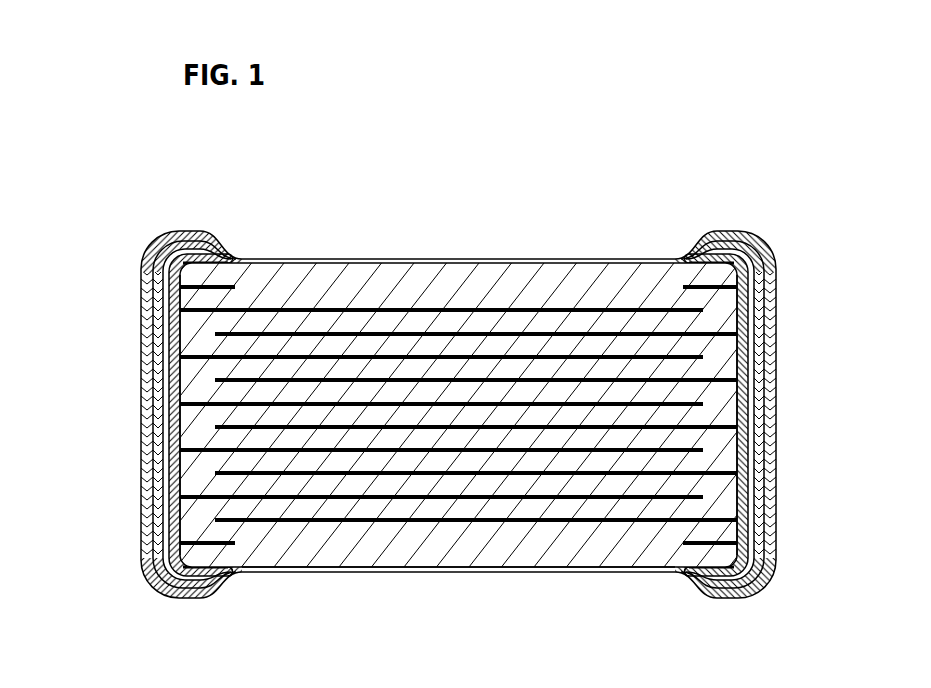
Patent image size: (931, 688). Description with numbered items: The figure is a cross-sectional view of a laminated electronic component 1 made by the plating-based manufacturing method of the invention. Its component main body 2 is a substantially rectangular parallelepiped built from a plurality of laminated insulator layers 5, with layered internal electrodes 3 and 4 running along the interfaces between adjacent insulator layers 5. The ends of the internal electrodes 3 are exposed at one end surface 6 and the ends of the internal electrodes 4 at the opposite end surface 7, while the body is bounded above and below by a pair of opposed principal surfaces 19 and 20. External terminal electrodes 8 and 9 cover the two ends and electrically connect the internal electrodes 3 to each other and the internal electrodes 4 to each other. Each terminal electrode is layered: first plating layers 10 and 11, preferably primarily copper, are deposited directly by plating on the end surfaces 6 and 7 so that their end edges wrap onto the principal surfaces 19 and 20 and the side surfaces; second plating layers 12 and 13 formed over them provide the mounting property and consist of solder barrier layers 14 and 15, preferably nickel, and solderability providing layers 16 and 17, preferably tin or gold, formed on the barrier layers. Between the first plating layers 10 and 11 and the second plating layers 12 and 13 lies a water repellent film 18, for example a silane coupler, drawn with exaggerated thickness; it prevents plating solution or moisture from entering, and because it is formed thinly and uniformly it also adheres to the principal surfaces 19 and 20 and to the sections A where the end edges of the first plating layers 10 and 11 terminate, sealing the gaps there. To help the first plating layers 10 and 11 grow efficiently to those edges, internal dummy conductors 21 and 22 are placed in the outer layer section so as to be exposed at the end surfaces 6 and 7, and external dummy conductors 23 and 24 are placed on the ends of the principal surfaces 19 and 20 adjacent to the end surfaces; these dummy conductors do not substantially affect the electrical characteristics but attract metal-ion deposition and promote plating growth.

The laminated electronic component 1 is at (261, 173).
The component main body 2 is at (465, 417).
The internal electrodes 3 is at (405, 357).
The internal electrodes 4 is at (552, 380).
The insulator layers 5 is at (482, 345).
The end surface 6 is at (170, 430).
The end surface 7 is at (738, 408).
The external terminal electrode 8 is at (131, 440).
The external terminal electrode 9 is at (788, 444).
The first plating layer 10 is at (170, 283).
The first plating layer 11 is at (738, 287).
The second plating layer 12 is at (139, 414).
The second plating layer 13 is at (771, 414).
The solder barrier layer 14 is at (157, 310).
The solder barrier layer 15 is at (758, 334).
The solderability providing layer 16 is at (143, 347).
The solderability providing layer 17 is at (770, 373).
The water repellent film 18 is at (577, 568).
The principal surface 19 is at (328, 258).
The principal surface 20 is at (397, 568).
The internal dummy conductor 21 is at (207, 547).
The internal dummy conductor 22 is at (728, 545).
The external dummy conductor 23 is at (210, 573).
The external dummy conductor 24 is at (702, 573).
The sections A is at (238, 259).